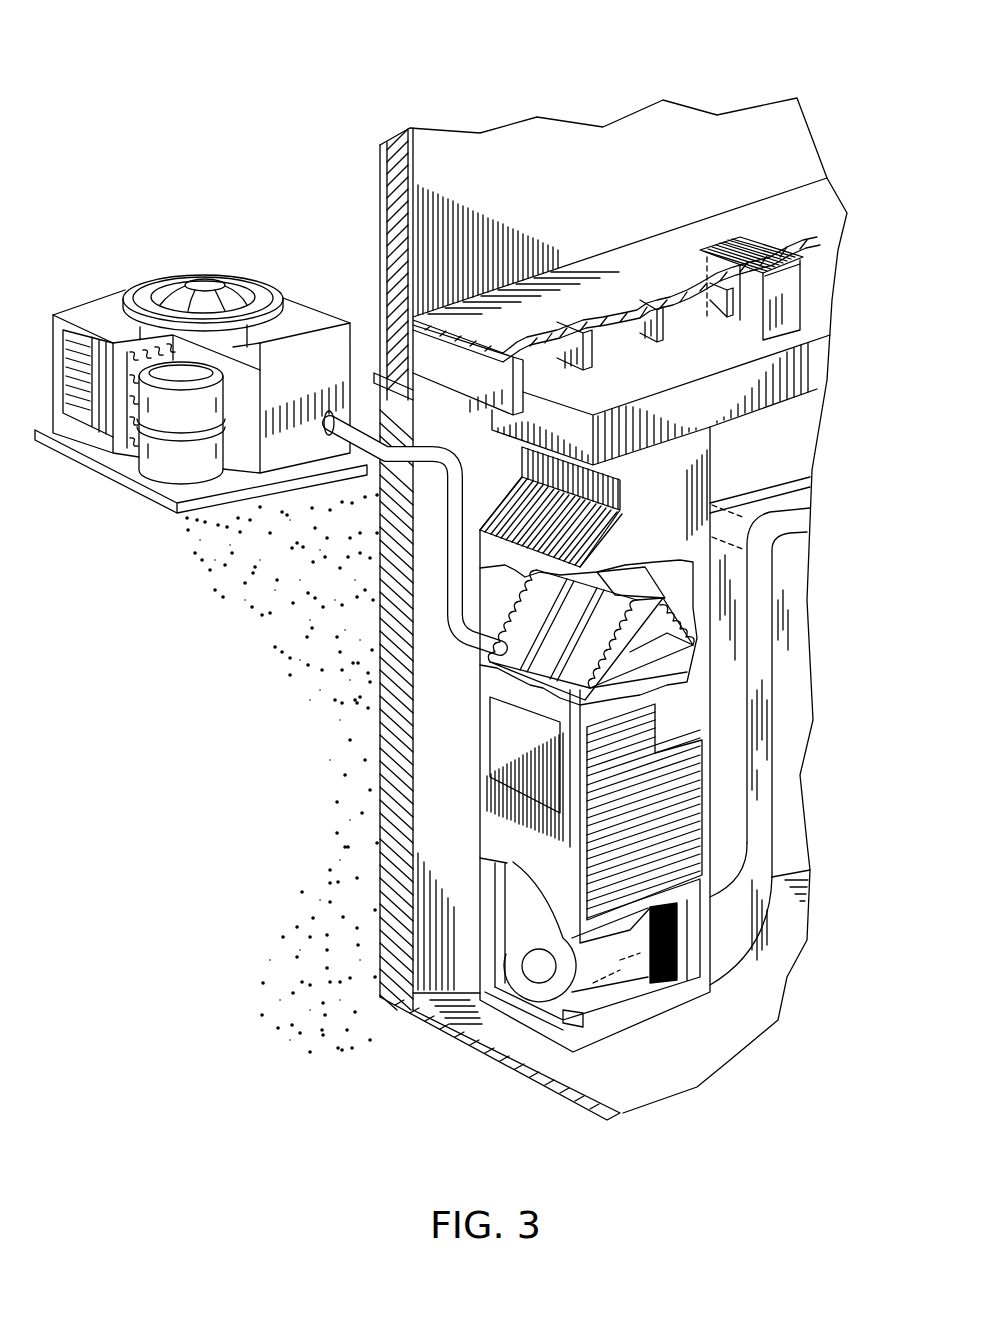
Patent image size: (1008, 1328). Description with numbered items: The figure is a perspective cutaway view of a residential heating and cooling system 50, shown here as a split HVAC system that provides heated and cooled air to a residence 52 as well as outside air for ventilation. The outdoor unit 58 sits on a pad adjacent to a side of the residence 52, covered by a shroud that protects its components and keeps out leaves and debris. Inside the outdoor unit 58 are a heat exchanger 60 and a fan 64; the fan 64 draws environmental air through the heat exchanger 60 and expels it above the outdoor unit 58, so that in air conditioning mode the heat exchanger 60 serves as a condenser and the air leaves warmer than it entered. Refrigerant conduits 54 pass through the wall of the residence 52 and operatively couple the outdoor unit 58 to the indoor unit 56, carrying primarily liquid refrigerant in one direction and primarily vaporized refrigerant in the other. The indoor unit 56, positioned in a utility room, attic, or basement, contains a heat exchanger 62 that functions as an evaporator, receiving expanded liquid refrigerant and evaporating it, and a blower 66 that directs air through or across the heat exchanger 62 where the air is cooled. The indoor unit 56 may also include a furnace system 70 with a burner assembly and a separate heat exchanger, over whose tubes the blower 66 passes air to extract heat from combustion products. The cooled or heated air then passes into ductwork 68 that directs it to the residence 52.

The residential heating and cooling system 50 is at (203, 97).
The residence 52 is at (522, 148).
The refrigerant conduits 54 is at (443, 540).
The indoor unit 56 is at (460, 795).
The outdoor unit 58 is at (165, 268).
The heat exchanger 60 is at (137, 353).
The heat exchanger 62 is at (540, 663).
The fan 64 is at (227, 283).
The blower 66 is at (532, 990).
The ductwork 68 is at (780, 320).
The furnace system 70 is at (490, 745).